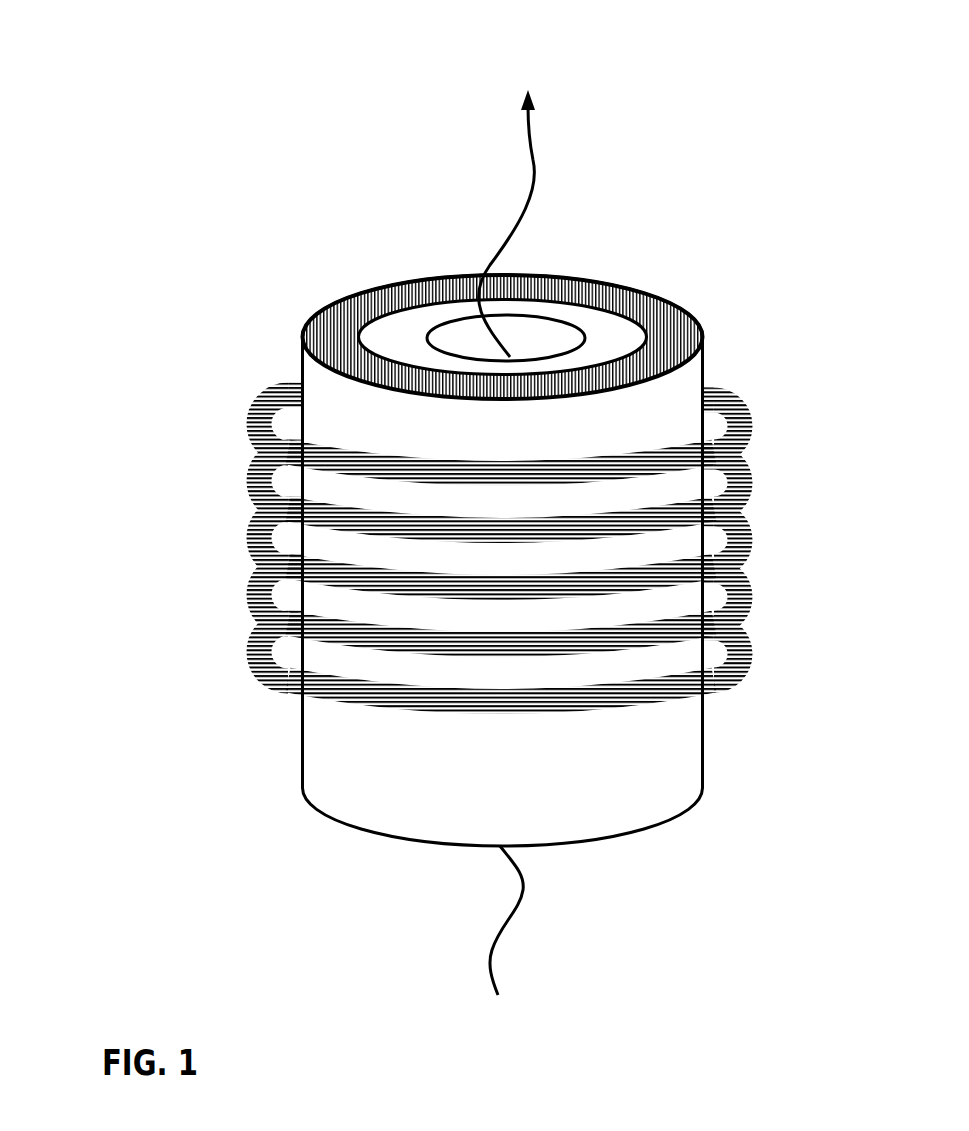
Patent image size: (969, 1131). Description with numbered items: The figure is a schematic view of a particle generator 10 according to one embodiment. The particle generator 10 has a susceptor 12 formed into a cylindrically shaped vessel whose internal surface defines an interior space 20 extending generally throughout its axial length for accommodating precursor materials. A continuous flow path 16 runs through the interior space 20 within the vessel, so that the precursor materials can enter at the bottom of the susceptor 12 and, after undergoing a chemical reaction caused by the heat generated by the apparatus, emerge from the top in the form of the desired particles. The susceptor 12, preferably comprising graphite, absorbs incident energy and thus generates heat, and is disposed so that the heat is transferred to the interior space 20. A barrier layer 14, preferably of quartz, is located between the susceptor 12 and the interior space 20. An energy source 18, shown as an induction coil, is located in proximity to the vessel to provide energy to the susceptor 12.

The particle generator 10 is at (453, 523).
The susceptor 12 is at (329, 322).
The barrier layer 14 is at (403, 323).
The continuous flow path 16 is at (501, 942).
The energy source 18 is at (243, 471).
The interior space 20 is at (562, 337).